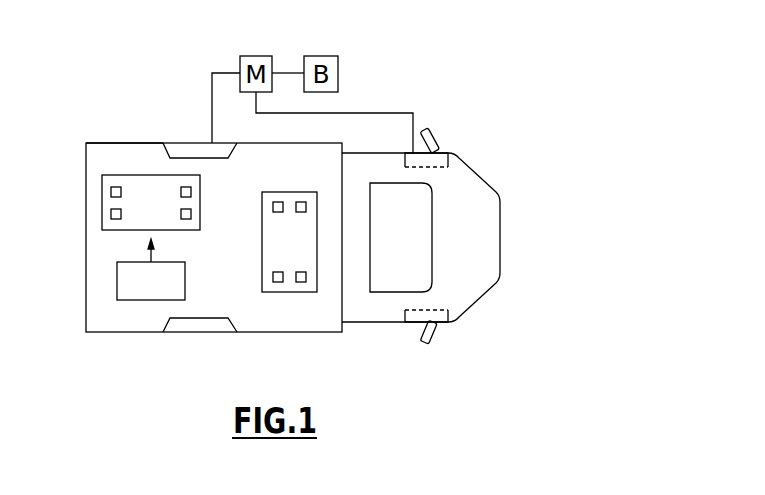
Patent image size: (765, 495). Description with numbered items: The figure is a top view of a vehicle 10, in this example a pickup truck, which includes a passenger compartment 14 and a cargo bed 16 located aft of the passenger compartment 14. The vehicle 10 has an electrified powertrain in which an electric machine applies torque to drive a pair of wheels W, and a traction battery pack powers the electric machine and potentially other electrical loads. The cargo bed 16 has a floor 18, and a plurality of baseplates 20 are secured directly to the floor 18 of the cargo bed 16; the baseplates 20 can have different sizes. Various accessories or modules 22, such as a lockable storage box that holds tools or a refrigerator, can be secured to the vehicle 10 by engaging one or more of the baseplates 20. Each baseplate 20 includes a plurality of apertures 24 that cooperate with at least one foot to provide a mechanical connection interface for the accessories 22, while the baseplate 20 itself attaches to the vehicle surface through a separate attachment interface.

The vehicle 10 is at (547, 138).
The passenger compartment 14 is at (395, 303).
The cargo bed 16 is at (125, 318).
The floor 18 is at (113, 162).
The baseplate 20 is at (104, 181).
The accessory/module 22 is at (126, 278).
The aperture 24 is at (110, 191).
The wheel W is at (183, 150).